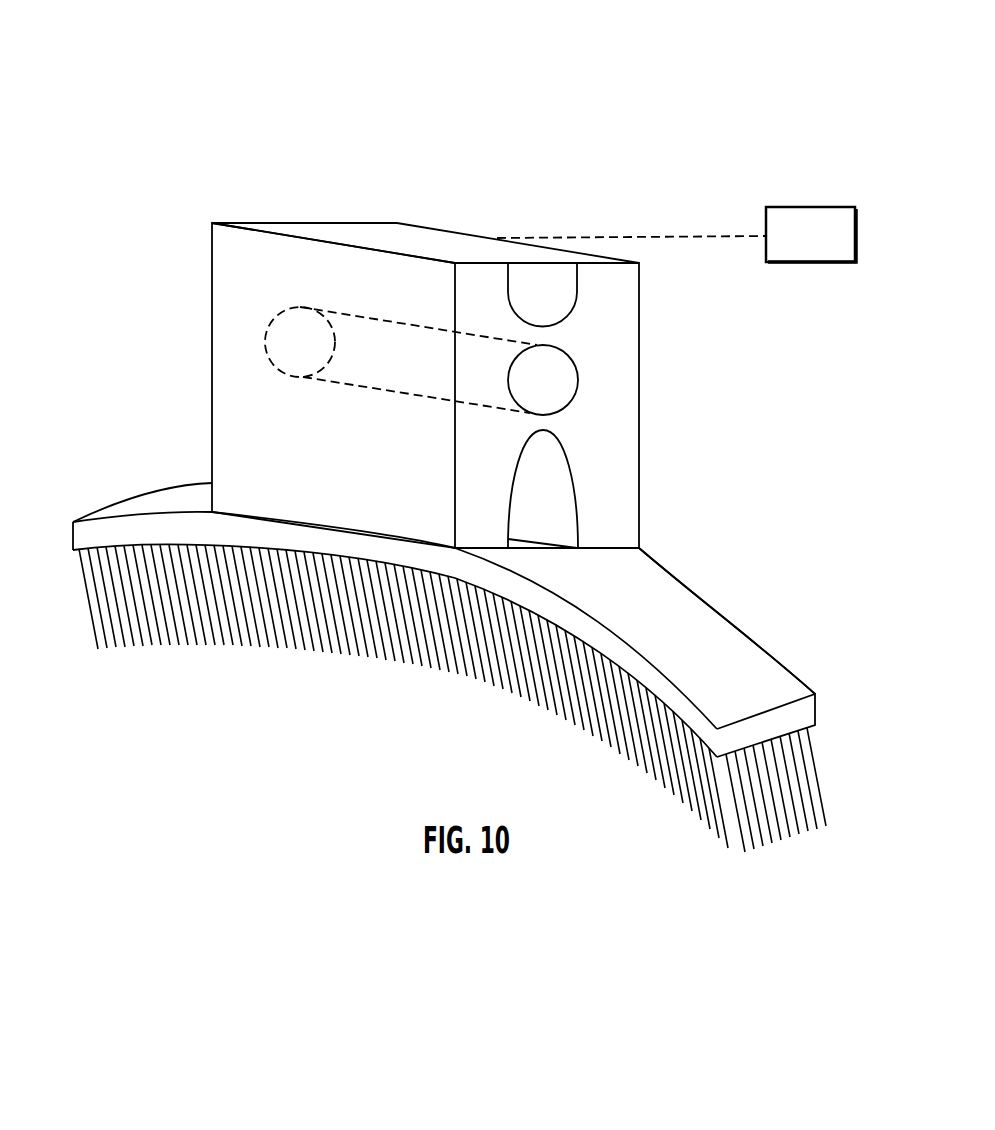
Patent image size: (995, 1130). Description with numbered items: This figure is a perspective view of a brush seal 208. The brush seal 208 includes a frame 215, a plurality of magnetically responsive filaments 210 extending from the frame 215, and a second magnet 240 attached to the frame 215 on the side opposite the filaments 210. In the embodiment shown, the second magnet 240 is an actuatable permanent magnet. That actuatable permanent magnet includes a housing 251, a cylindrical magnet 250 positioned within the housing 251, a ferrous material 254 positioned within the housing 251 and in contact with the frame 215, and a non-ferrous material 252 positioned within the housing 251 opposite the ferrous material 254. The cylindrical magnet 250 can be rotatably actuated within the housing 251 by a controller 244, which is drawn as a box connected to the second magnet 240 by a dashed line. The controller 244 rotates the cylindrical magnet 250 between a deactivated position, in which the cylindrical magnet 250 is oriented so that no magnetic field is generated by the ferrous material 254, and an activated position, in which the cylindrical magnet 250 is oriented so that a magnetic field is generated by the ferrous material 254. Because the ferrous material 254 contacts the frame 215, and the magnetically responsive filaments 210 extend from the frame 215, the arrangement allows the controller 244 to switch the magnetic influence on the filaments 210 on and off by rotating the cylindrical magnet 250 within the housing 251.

The brush seal 208 is at (118, 152).
The magnetically responsive filaments 210 is at (753, 795).
The frame 215 is at (718, 630).
The second magnet 240 is at (401, 237).
The controller 244 is at (827, 251).
The cylindrical magnet 250 is at (565, 380).
The housing 251 is at (228, 297).
The non-ferrous material 252 is at (553, 295).
The ferrous material 254 is at (548, 485).